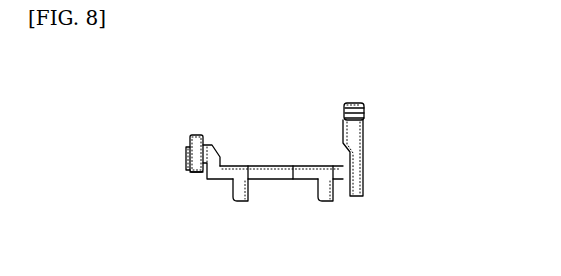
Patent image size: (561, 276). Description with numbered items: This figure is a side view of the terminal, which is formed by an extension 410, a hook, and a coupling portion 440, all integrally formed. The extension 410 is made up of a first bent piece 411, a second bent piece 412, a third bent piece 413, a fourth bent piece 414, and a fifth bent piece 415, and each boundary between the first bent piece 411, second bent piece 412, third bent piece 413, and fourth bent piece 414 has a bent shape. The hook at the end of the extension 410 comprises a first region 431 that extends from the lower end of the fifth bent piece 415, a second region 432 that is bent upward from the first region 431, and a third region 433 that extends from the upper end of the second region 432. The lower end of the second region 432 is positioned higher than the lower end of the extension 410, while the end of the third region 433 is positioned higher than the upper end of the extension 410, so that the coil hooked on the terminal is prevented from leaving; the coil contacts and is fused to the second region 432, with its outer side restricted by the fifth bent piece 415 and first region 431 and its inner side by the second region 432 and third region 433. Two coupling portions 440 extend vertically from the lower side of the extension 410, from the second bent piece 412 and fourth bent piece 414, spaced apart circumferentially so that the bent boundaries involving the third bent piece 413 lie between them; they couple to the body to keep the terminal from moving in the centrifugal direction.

The extension 410 is at (363, 148).
The first bent piece 411 is at (339, 157).
The second bent piece 412 is at (309, 175).
The third bent piece 413 is at (266, 175).
The fourth bent piece 414 is at (242, 165).
The fifth bent piece 415 is at (208, 143).
The first region 431 is at (187, 165).
The second region 432 is at (193, 174).
The third region 433 is at (186, 144).
The coupling portion 440 is at (252, 202).